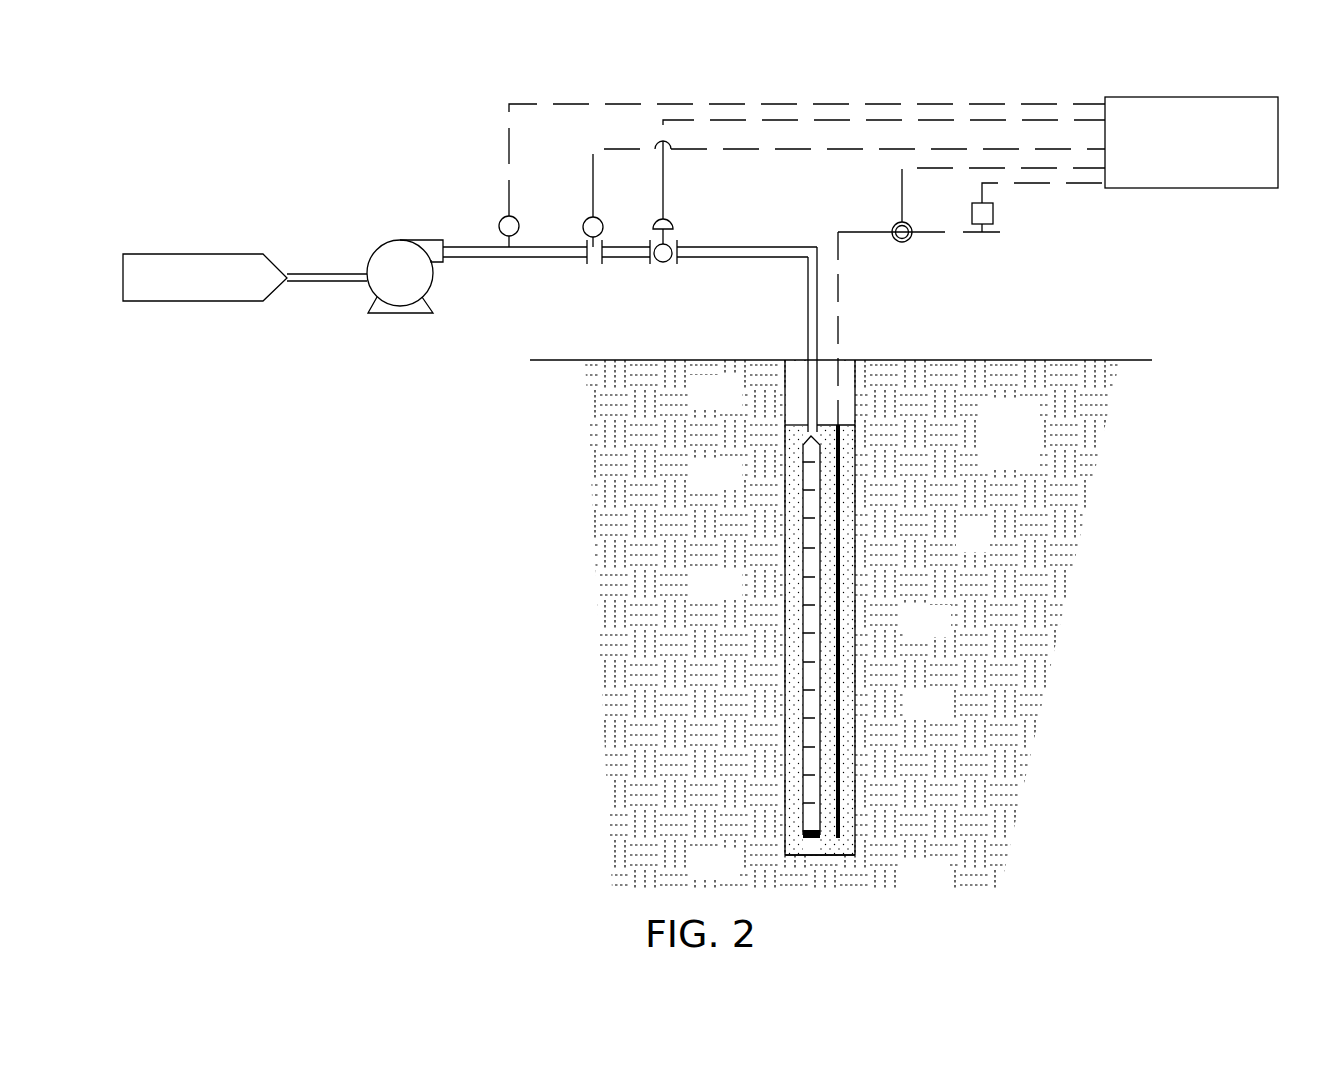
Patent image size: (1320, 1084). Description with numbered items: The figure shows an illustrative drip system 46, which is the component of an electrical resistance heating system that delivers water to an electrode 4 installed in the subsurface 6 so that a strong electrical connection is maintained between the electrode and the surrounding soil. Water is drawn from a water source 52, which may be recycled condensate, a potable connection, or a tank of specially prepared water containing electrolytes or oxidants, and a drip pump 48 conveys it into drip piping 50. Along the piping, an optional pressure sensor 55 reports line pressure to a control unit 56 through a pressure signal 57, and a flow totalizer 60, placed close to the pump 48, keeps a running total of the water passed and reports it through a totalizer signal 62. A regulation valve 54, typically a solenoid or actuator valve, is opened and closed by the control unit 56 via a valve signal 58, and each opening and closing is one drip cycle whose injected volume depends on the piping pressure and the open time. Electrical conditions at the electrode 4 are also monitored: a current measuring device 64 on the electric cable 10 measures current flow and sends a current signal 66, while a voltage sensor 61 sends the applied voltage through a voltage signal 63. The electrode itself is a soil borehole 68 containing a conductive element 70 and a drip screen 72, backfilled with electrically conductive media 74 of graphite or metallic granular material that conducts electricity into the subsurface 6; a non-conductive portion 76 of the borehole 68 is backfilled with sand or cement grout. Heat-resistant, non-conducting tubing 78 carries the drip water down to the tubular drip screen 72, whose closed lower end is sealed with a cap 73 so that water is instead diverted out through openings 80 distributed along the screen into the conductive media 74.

The drip system 46 is at (350, 100).
The drip pump 48 is at (398, 240).
The drip piping 50 is at (478, 245).
The water source 52 is at (205, 254).
The regulation valve 54 is at (670, 218).
The pressure sensor 55 is at (500, 218).
The control unit 56 is at (1195, 95).
The pressure signal 57 is at (787, 103).
The valve signal 58 is at (893, 120).
The flow totalizer 60 is at (585, 220).
The voltage sensor 61 is at (993, 223).
The totalizer signal 62 is at (945, 149).
The voltage signal 63 is at (1053, 183).
The current measuring device 64 is at (900, 242).
The current signal 66 is at (980, 168).
The electric cable 10 is at (930, 233).
The tubing 78 is at (807, 343).
The non-conductive portion 76 is at (797, 393).
The openings 80 is at (812, 492).
The drip screen 72 is at (810, 598).
The electrically conductive media 74 is at (848, 603).
The conductive element 70 is at (840, 695).
The soil borehole 68 is at (785, 845).
The cap 73 is at (820, 842).
The electrode 4 is at (880, 546).
The subsurface 6 is at (852, 625).